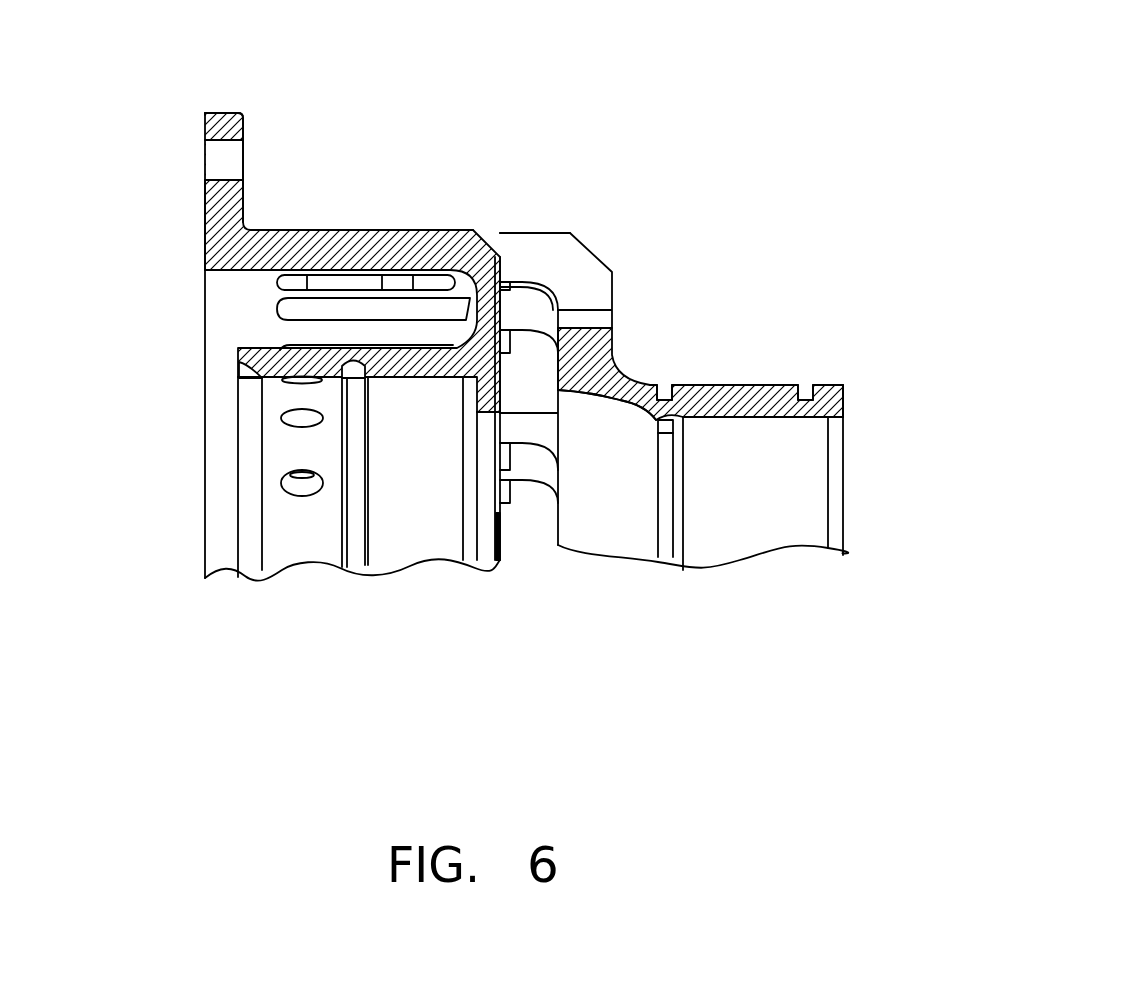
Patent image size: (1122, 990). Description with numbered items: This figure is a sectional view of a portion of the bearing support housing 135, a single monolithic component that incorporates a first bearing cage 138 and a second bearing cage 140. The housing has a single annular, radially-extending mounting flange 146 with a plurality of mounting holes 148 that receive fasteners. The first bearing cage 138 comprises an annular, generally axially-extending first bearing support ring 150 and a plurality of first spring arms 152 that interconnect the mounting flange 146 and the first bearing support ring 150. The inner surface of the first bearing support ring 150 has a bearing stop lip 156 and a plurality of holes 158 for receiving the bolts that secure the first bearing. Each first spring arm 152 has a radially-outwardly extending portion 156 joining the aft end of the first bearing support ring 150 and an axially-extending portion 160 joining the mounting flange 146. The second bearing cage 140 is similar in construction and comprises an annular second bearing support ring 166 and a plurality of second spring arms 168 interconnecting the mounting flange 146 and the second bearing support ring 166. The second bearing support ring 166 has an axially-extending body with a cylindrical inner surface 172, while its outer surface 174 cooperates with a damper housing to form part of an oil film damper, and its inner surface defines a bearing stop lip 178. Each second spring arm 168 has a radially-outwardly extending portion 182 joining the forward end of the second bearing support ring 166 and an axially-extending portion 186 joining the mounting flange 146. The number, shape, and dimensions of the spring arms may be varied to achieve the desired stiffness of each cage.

The bearing support housing 135 is at (612, 92).
The first bearing cage 138 is at (200, 414).
The second bearing cage 140 is at (696, 296).
The mounting flange 146 is at (223, 206).
The mounting holes 148 is at (238, 152).
The first bearing support ring 150 is at (265, 356).
The first spring arms 152 is at (377, 212).
The bearing stop lip 156 is at (505, 280).
The holes 158 is at (302, 487).
The axially-extending portion 160 is at (312, 245).
The second bearing support ring 166 is at (845, 400).
The second spring arms 168 is at (614, 248).
The cylindrical inner surface 172 is at (779, 428).
The outer surface 174 is at (781, 378).
The bearing stop lip 178 is at (657, 424).
The radially-outwardly extending portion 182 is at (588, 358).
The axially-extending portion 186 is at (508, 242).